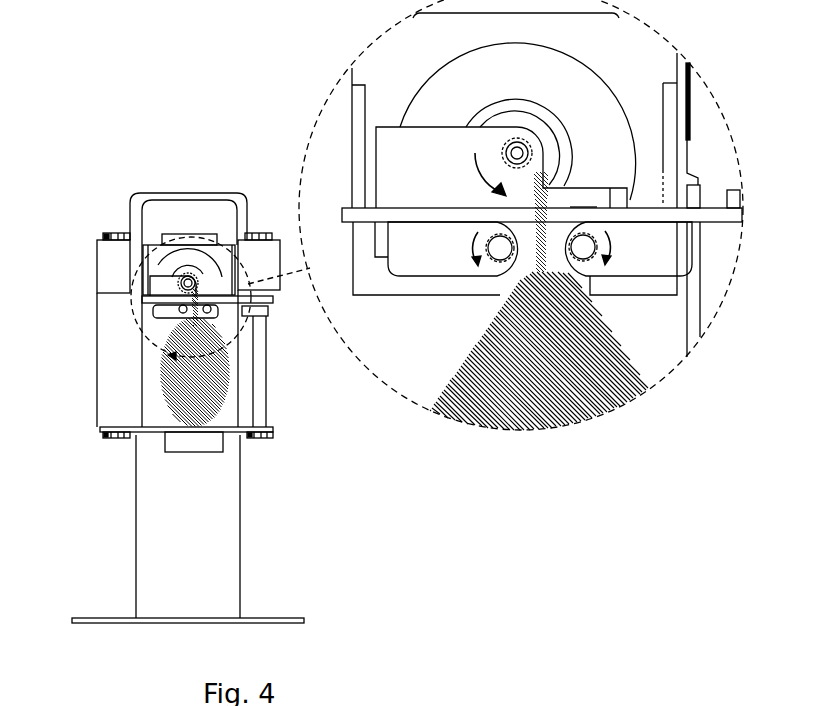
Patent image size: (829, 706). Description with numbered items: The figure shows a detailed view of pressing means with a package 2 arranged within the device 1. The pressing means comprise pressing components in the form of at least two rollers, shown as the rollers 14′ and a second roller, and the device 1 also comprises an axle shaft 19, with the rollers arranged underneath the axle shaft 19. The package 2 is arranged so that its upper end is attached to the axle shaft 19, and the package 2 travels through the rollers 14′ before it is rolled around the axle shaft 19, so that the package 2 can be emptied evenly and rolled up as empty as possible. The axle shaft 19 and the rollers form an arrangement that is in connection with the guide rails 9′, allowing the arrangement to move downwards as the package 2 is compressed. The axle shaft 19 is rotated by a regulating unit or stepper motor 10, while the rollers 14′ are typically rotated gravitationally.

The device 1 is at (104, 194).
The regulating unit/stepper motor 10 is at (160, 257).
The guide rails 9′ is at (258, 352).
The package 2 is at (208, 390).
The axle shaft 19 is at (513, 148).
The pressing component 14′ is at (497, 280).